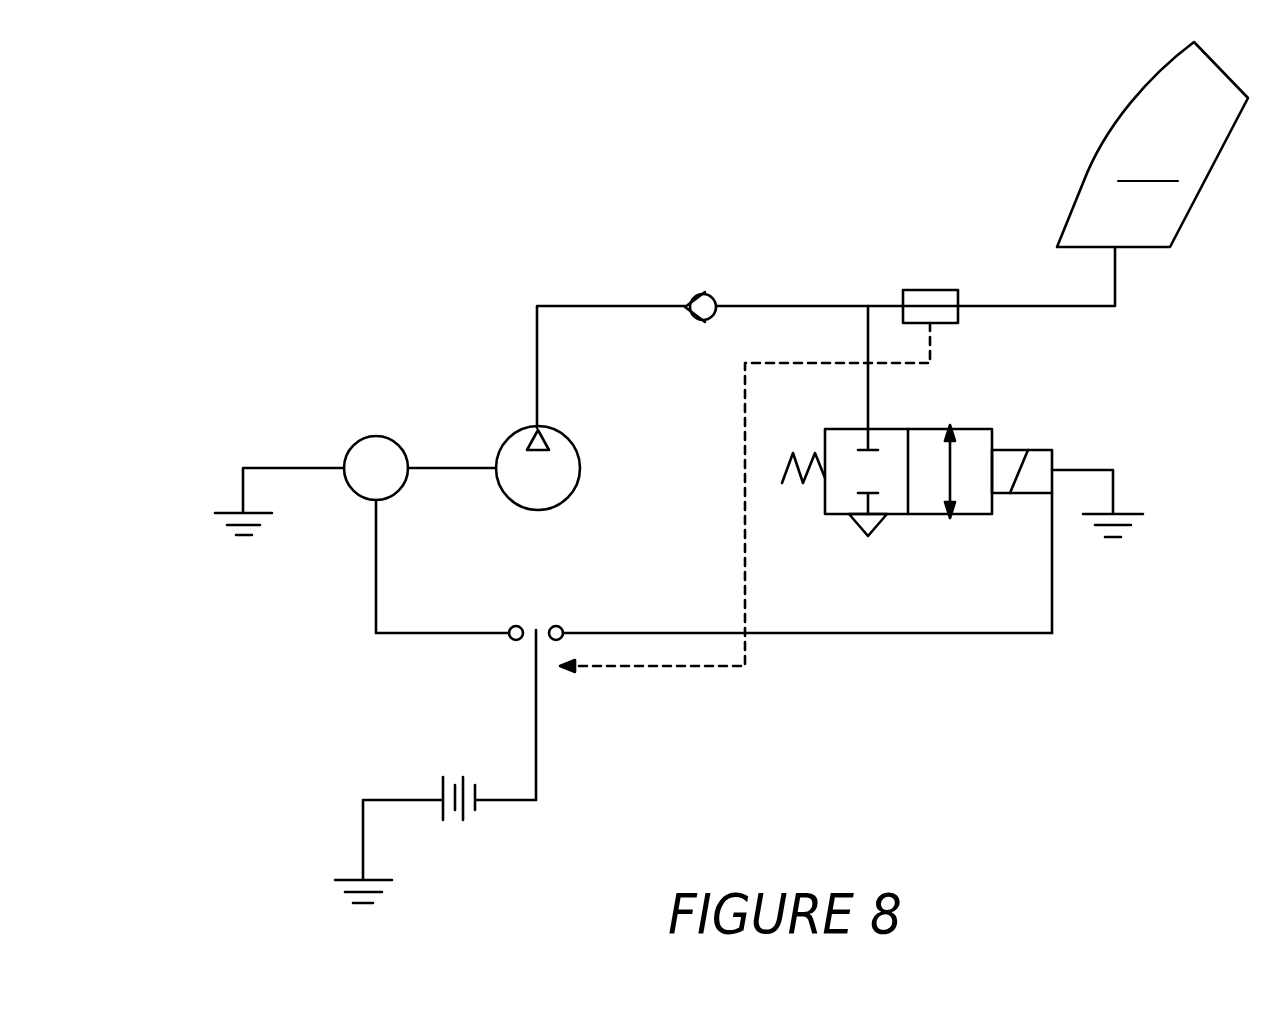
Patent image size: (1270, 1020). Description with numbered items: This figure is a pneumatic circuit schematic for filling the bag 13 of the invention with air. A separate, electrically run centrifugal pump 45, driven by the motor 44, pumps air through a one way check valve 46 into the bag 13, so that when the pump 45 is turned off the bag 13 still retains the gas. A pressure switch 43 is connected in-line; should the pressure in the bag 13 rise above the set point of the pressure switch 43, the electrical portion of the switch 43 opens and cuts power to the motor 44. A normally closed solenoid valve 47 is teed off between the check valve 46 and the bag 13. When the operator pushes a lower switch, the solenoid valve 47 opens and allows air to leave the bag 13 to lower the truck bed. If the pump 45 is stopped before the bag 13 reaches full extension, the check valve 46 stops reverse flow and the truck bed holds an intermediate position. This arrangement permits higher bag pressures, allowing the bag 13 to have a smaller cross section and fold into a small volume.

The bag 13 is at (1083, 183).
The pressure switch 43 is at (935, 290).
The motor 44 is at (350, 447).
The centrifugal pump 45 is at (566, 500).
The one way check valve 46 is at (718, 296).
The solenoid valve 47 is at (992, 429).